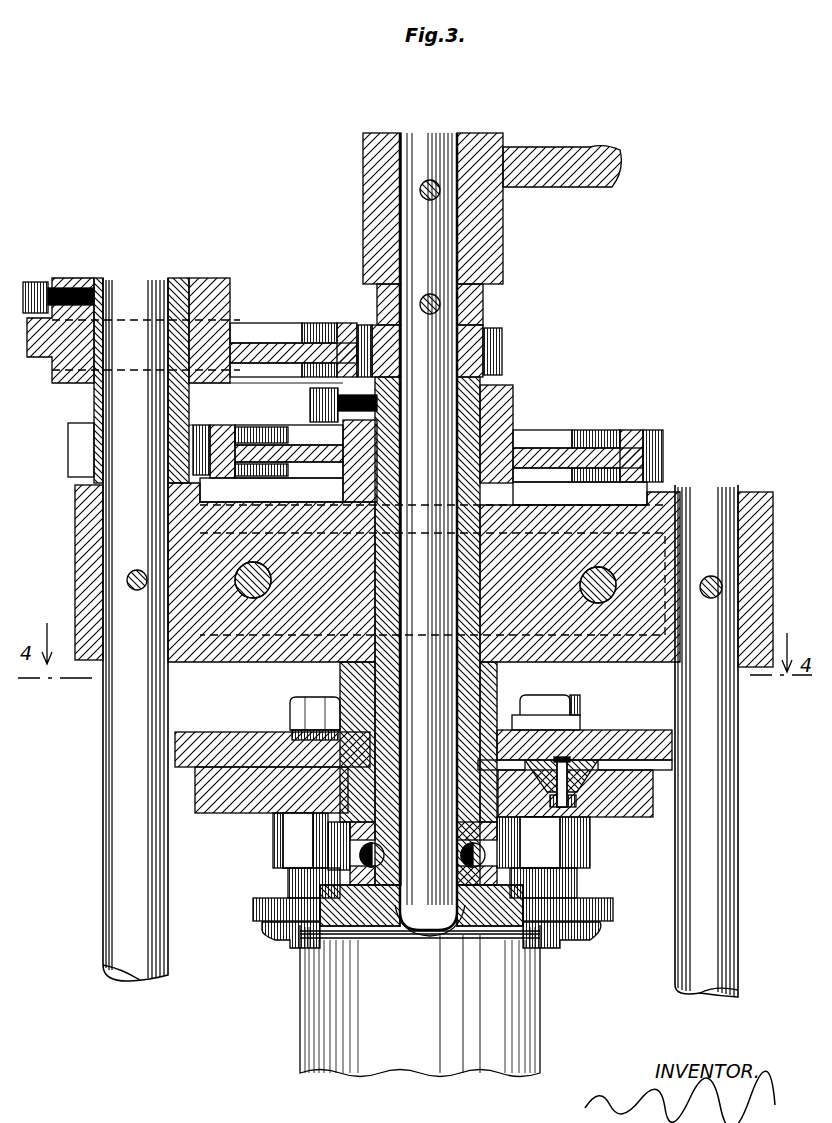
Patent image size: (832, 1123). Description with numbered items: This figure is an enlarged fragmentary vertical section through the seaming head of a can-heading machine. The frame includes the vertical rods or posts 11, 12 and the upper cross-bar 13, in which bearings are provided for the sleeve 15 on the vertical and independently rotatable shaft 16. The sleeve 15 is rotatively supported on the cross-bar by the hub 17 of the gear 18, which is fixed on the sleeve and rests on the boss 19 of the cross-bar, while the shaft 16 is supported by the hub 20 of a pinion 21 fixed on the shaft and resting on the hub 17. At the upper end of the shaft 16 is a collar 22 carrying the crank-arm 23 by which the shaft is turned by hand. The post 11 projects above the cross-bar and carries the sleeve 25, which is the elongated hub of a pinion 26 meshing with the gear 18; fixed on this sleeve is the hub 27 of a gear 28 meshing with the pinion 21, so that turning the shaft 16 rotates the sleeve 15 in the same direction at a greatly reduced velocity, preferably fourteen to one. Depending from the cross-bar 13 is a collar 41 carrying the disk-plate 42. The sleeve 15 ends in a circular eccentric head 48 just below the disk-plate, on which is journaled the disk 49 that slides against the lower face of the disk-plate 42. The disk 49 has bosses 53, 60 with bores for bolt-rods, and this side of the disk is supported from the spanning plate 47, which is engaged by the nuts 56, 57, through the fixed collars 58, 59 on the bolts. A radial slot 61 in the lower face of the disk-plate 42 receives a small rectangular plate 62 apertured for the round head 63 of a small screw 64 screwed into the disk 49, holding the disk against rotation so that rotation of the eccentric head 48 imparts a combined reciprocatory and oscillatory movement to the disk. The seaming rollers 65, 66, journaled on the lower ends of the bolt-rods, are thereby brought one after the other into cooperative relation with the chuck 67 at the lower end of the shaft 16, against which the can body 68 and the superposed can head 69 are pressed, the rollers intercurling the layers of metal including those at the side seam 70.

The vertical rod or post 11 is at (110, 893).
The vertical rod or post 12 is at (712, 498).
The upper cross-bar 13 is at (624, 508).
The sleeve 15 is at (510, 380).
The vertical shaft 16 is at (443, 132).
The hub of gear 18 17 is at (512, 414).
The gear 18 is at (584, 430).
The boss 19 is at (515, 493).
The hub of pinion 21 20 is at (486, 308).
The pinion 21 is at (504, 348).
The collar 22 is at (372, 185).
The crank-arm 23 is at (620, 172).
The sleeve 25 is at (196, 401).
The pinion 26 is at (70, 455).
The hub of gear 28 27 is at (208, 280).
The gear 28 is at (286, 326).
The collar 41 is at (500, 678).
The disk-plate 42 is at (204, 734).
The sliding plate 47 is at (298, 718).
The eccentric circular head 48 is at (335, 832).
The disk 49 is at (198, 790).
The boss 53 is at (292, 840).
The nut 56 is at (313, 700).
The nut 57 is at (546, 712).
The fixed collar 58 is at (290, 877).
The fixed collar 59 is at (580, 882).
The boss 60 is at (590, 843).
The radial slot or groove 61 is at (650, 760).
The small rectangular plate 62 is at (567, 764).
The round head 63 is at (560, 758).
The small screw 64 is at (578, 780).
The seaming roller 65 is at (265, 938).
The seaming roller 66 is at (600, 936).
The chuck 67 is at (466, 922).
The can body 68 is at (542, 1030).
The can head or cover 69 is at (402, 942).
The side seam 70 is at (468, 1026).